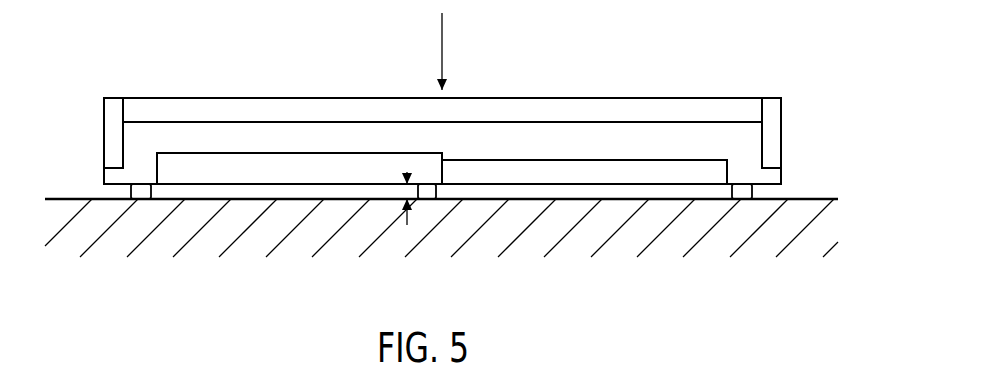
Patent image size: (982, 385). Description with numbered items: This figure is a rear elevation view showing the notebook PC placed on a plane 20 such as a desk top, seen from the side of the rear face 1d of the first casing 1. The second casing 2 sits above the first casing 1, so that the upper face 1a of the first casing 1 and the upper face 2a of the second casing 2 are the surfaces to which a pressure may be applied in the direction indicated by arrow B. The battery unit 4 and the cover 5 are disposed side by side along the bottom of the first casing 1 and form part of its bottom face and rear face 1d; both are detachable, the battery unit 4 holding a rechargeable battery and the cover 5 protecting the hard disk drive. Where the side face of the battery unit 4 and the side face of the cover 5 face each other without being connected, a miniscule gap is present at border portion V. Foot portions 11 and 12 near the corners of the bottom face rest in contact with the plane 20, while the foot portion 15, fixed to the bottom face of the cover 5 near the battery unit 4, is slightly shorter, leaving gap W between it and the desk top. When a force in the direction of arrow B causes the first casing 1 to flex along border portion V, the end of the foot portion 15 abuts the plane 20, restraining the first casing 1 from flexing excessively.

The first casing 1 is at (782, 173).
The upper face of the first casing 1a is at (522, 110).
The rear face of the first casing 1d is at (749, 136).
The second casing 2 is at (682, 108).
The upper face of the second casing 2a is at (598, 86).
The battery unit 4 is at (618, 172).
The hard disk drive cover 5 is at (278, 170).
The foot portion 11 is at (141, 200).
The foot portion 12 is at (742, 200).
The foot portion 15 is at (428, 200).
The plane 20 is at (66, 186).
The arrow B is at (440, 42).
The gap W is at (405, 212).
The border portion V is at (455, 194).